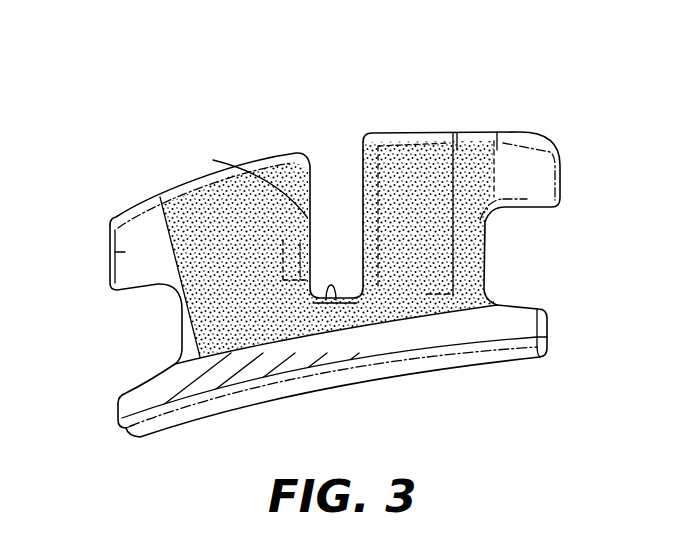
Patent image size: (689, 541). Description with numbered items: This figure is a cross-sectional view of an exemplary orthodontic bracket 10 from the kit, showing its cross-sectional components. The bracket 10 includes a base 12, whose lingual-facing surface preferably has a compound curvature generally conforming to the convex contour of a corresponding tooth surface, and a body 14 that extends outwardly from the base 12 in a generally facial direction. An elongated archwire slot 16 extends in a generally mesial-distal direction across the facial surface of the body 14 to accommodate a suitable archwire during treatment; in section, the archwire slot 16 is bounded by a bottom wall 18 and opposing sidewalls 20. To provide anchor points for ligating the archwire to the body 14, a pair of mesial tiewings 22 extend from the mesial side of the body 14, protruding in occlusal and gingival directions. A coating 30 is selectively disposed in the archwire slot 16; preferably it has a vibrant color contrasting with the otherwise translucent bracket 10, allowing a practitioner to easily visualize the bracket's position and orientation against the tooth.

The orthodontic bracket 10 is at (499, 56).
The base 12 is at (542, 327).
The body 14 is at (434, 238).
The archwire slot 16 is at (358, 248).
The bottom wall 18 is at (326, 300).
The sidewalls 20 is at (363, 183).
The mesial tiewings 22 is at (125, 252).
The coating 30 is at (220, 232).